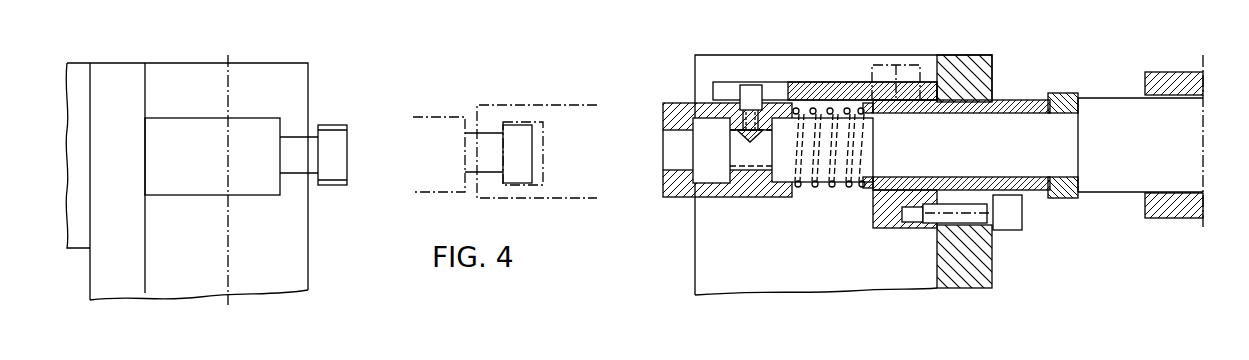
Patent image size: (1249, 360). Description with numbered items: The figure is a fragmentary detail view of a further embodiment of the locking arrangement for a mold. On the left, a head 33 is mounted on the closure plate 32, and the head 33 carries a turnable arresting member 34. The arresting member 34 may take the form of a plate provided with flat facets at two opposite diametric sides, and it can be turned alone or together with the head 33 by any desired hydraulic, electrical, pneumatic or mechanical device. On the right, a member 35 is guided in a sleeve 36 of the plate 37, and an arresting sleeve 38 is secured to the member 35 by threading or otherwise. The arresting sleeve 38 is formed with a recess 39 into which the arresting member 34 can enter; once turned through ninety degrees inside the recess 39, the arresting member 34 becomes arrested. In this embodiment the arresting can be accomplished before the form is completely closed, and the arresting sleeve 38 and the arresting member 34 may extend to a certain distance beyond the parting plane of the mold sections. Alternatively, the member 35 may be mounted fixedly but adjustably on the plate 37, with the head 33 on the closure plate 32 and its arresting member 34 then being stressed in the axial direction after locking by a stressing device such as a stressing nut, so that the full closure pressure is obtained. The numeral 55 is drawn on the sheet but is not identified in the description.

The closure plate 32 is at (128, 272).
The head 33 is at (188, 172).
The arresting member 34 is at (337, 170).
The member 35 is at (1103, 108).
The sleeve 36 is at (1025, 103).
The plate 37 is at (936, 243).
The arresting sleeve 38 is at (762, 197).
The recess 39 is at (717, 178).
The housing assembly 55 is at (843, 207).